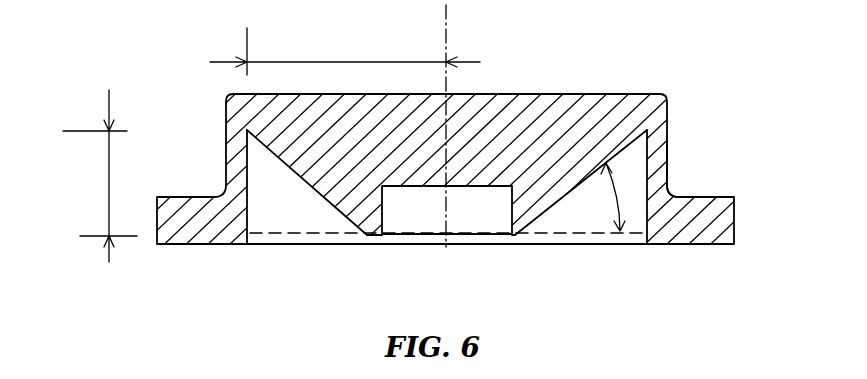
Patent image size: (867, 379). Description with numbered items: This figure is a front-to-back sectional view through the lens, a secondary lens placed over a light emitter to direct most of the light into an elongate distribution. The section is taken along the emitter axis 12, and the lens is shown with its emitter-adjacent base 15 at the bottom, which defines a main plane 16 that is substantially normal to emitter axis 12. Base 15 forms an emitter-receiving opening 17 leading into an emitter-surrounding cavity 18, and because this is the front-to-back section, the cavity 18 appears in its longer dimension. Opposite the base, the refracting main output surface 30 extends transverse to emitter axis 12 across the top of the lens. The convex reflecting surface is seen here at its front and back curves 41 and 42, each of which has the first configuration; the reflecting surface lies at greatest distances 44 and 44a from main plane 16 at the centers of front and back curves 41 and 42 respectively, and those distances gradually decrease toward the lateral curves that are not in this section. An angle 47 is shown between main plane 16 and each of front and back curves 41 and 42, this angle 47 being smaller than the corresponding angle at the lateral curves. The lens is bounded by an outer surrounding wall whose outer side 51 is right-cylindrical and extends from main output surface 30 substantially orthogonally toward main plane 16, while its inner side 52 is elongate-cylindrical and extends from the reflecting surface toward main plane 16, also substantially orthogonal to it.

The emitter axis 12 is at (448, 87).
The emitter-adjacent base 15 is at (518, 237).
The main plane 16 is at (472, 238).
The emitter-receiving opening 17 is at (438, 230).
The emitter-surrounding cavity 18 is at (422, 213).
The main output surface 30 is at (572, 92).
The front curve 41 is at (337, 213).
The back curve 42 is at (561, 204).
The greatest distance 44 is at (345, 51).
The greatest distance 44a is at (97, 176).
The angle 47 is at (618, 198).
The outer side 51 is at (665, 148).
The inner side 52 is at (246, 183).